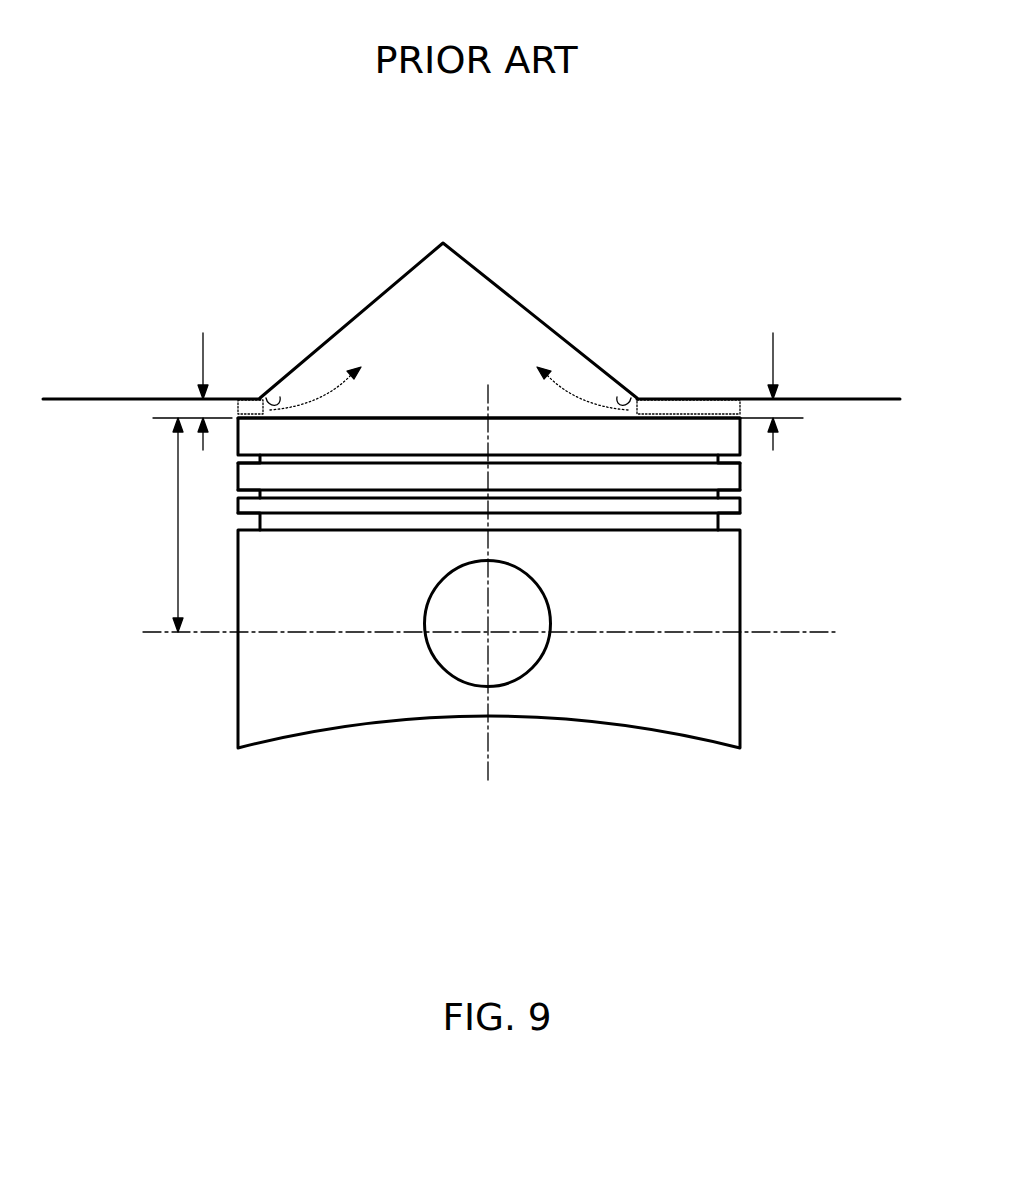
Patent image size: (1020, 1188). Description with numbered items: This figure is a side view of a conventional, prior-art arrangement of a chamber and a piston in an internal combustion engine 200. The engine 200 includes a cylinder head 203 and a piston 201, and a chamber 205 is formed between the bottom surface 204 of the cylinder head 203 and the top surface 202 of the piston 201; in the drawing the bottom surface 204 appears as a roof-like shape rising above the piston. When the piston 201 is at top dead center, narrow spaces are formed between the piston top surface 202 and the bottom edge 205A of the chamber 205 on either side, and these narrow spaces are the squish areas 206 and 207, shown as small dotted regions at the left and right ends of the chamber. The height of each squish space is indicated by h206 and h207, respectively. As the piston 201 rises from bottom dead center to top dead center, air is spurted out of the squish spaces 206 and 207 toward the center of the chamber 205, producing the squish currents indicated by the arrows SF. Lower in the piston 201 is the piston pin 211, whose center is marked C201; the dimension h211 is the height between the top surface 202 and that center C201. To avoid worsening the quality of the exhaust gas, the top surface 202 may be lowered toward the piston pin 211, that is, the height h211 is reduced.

The internal combustion engine 200 is at (209, 865).
The piston 201 is at (253, 751).
The top surface of the piston 202 is at (459, 405).
The cylinder head 203 is at (836, 401).
The bottom surface of cylinder head 204 is at (425, 286).
The chamber 205 is at (478, 300).
The bottom edge of the chamber 205A is at (266, 398).
The squish area 206 is at (246, 399).
The squish area 207 is at (663, 399).
The piston pin 211 is at (432, 653).
The center of the piston pin C201 is at (815, 635).
The height of squish space 206 h206 is at (192, 385).
The height of squish space 207 h207 is at (771, 391).
The height between top surface and piston pin center h211 is at (165, 525).
The squish current SF is at (449, 379).